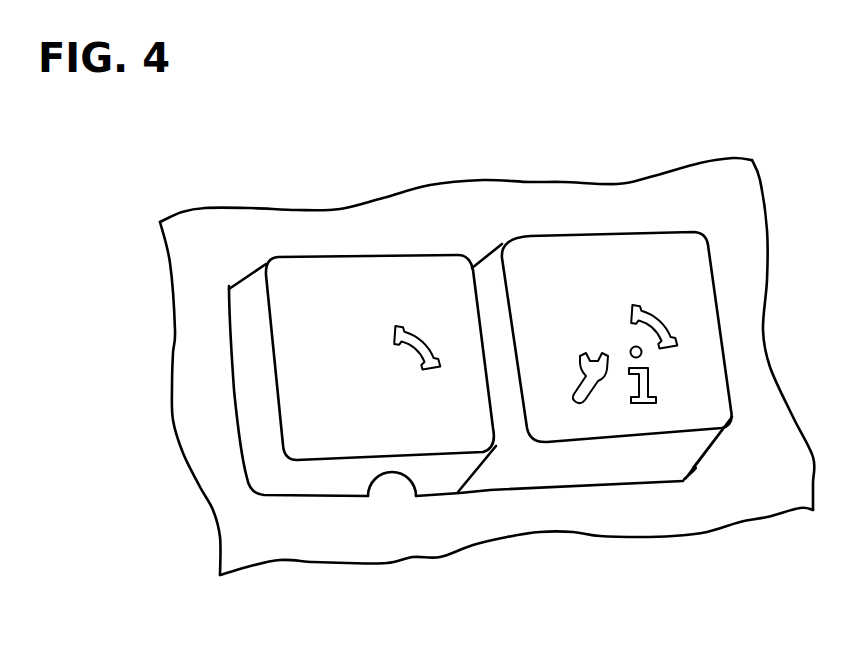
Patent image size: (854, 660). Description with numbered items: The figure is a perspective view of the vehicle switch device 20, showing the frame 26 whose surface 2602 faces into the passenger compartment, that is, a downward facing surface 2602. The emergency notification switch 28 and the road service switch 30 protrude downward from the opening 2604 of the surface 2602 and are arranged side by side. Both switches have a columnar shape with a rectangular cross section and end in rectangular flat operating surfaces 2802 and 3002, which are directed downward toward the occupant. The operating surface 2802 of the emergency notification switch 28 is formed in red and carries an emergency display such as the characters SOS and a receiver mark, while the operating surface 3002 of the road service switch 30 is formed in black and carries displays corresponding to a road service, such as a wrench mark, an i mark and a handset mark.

The vehicle switch device 20 is at (258, 195).
The frame 26 is at (511, 444).
The surface 2602 is at (752, 377).
The opening 2604 is at (408, 483).
The emergency notification switch 28 is at (365, 315).
The operating surface 2802 is at (387, 283).
The road service switch 30 is at (617, 287).
The operating surface 3002 is at (557, 277).